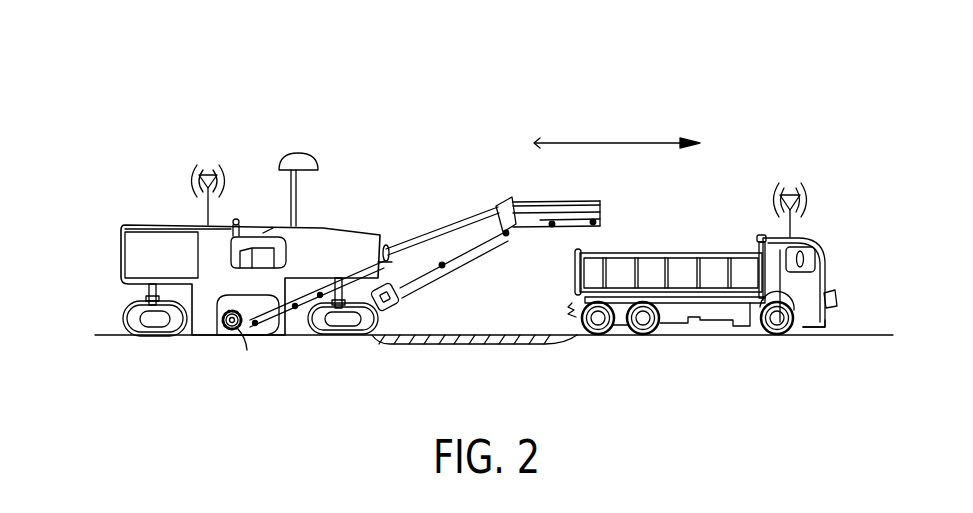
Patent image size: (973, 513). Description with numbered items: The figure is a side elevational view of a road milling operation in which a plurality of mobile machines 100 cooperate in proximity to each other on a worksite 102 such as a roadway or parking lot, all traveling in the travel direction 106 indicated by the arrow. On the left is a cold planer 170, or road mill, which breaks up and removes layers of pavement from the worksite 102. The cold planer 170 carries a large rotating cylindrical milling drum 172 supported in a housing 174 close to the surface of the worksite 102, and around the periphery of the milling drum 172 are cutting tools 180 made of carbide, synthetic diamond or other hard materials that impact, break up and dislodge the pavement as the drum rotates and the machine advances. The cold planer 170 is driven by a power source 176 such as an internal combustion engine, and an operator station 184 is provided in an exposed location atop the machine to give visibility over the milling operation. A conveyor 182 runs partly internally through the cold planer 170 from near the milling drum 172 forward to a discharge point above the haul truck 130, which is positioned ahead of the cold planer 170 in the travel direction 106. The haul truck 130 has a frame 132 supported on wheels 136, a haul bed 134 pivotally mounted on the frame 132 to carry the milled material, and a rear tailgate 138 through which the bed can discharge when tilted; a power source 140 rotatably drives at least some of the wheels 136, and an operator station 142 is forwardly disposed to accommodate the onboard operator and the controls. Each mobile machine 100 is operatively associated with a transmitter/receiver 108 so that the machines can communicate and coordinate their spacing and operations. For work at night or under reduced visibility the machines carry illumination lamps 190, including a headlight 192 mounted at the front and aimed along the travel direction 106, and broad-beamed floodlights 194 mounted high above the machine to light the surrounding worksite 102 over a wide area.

The mobile machine 100 is at (805, 78).
The worksite 102 is at (485, 335).
The travel direction 106 is at (598, 143).
The transmitter/receiver 108 is at (208, 174).
The haul truck 130 is at (721, 192).
The frame 132 is at (694, 327).
The haul bed 134 is at (680, 255).
The wheels 136 is at (650, 342).
The rear tailgate 138 is at (575, 270).
The power source 140 is at (817, 311).
The operator station 142 is at (816, 240).
The cold planer 170 is at (128, 176).
The milling drum 172 is at (229, 330).
The housing 174 is at (203, 328).
The power source 176 is at (125, 247).
The cutting tools 180 is at (243, 333).
The conveyor 182 is at (293, 309).
The operator station 184 is at (239, 219).
The illumination lamps 190 is at (330, 93).
The headlight 192 is at (390, 249).
The floodlights 194 is at (300, 152).